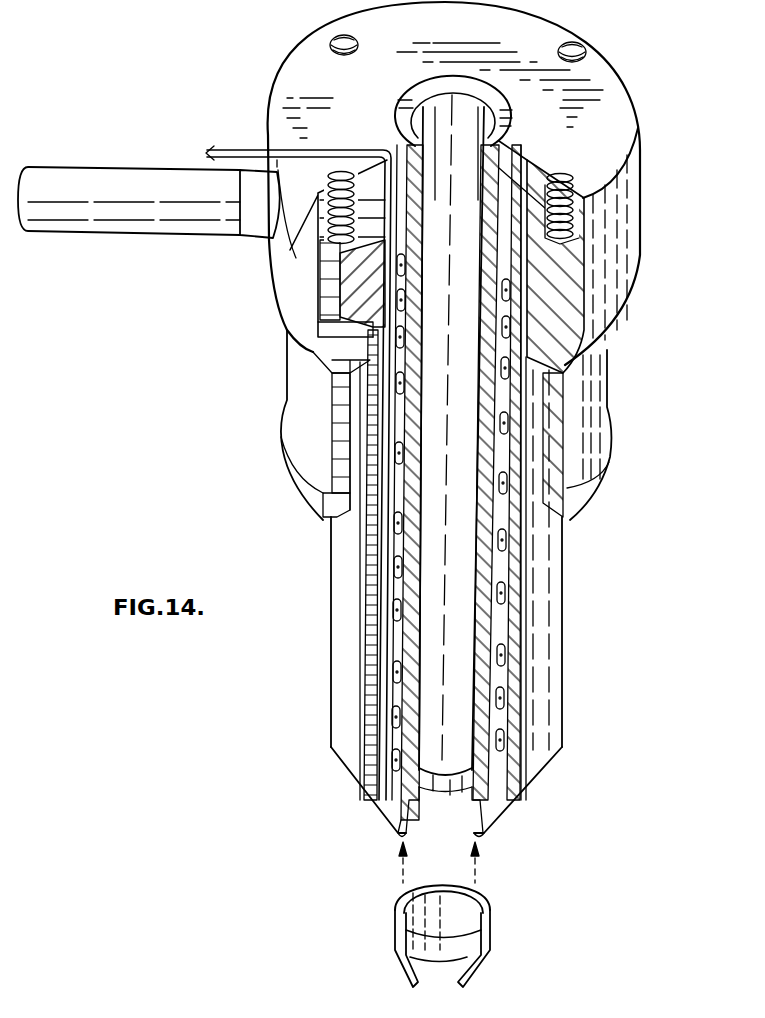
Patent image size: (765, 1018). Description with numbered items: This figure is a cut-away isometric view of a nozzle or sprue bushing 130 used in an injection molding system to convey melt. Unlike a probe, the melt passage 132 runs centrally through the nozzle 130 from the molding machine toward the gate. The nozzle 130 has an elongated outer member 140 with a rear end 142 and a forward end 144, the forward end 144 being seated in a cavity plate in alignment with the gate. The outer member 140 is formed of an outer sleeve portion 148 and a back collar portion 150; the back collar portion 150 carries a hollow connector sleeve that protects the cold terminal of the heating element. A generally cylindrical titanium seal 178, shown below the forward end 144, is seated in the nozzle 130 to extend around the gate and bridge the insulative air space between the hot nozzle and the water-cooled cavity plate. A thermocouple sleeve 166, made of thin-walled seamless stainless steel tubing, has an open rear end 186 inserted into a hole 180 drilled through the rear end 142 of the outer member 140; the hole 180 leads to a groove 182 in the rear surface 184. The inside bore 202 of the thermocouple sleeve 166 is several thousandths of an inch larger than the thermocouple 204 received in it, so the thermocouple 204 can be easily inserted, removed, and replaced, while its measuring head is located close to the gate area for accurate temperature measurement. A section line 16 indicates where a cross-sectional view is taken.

The rear surface 184 is at (393, 20).
The groove 182 is at (283, 143).
The hole 180 is at (393, 147).
The rear end 142 is at (622, 148).
The back collar portion 150 is at (570, 274).
The open rear end 186 is at (268, 249).
The nozzle 130 is at (613, 387).
The outer member 140 is at (540, 560).
The melt passage 132 is at (445, 617).
The outer sleeve portion 148 is at (513, 720).
The forward end 144 is at (513, 793).
The section line 16 is at (320, 811).
The titanium seal 178 is at (487, 940).
The inside bore 202 is at (387, 583).
The thermocouple 204 is at (385, 633).
The thermocouple sleeve 166 is at (378, 670).